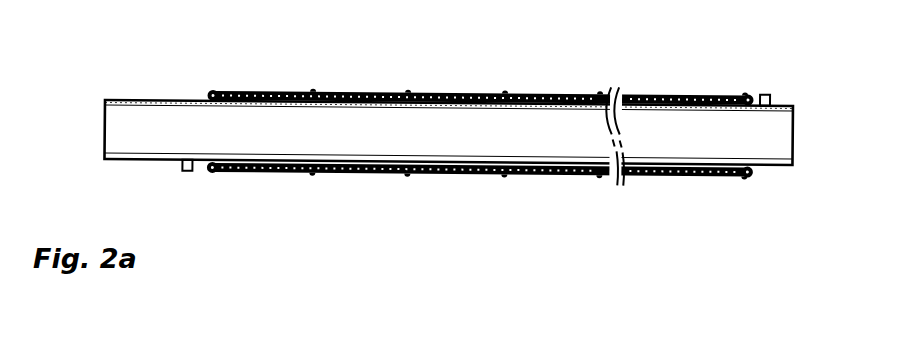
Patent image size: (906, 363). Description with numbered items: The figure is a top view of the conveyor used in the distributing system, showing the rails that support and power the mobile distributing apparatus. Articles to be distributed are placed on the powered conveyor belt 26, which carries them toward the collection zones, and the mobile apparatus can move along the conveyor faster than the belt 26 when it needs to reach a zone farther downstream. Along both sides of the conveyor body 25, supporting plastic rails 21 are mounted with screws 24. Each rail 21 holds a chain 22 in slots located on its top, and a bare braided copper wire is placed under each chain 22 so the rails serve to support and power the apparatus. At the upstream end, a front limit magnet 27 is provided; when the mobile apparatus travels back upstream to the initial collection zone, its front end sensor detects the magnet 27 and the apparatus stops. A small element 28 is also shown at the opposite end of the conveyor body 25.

The supporting plastic rail 21 is at (463, 91).
The chain 22 is at (268, 91).
The screw 24 is at (313, 91).
The conveyor body 25 is at (168, 101).
The powered conveyor belt 26 is at (157, 128).
The front limit magnet 27 is at (191, 173).
The top terminal block 28 is at (769, 95).